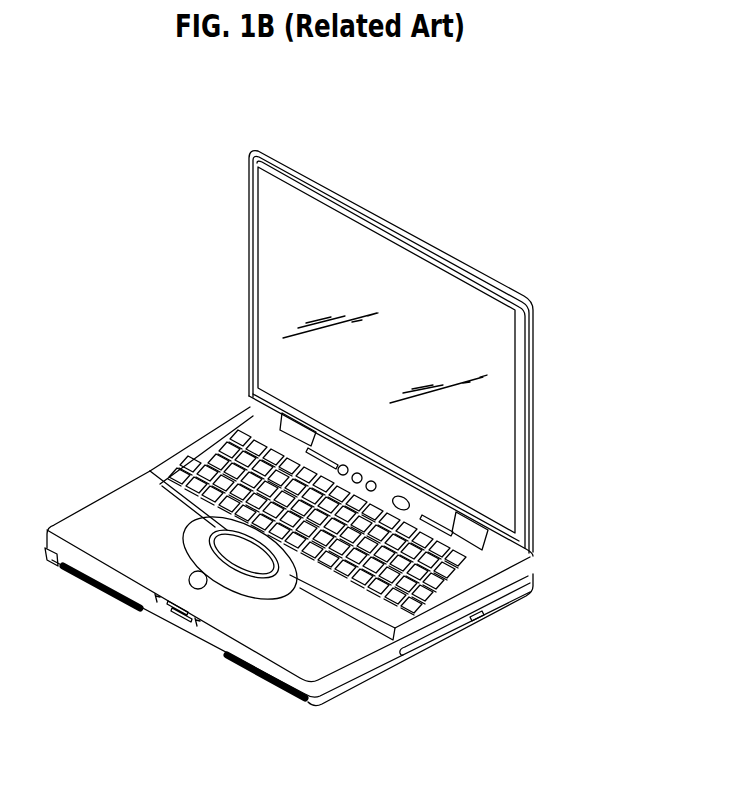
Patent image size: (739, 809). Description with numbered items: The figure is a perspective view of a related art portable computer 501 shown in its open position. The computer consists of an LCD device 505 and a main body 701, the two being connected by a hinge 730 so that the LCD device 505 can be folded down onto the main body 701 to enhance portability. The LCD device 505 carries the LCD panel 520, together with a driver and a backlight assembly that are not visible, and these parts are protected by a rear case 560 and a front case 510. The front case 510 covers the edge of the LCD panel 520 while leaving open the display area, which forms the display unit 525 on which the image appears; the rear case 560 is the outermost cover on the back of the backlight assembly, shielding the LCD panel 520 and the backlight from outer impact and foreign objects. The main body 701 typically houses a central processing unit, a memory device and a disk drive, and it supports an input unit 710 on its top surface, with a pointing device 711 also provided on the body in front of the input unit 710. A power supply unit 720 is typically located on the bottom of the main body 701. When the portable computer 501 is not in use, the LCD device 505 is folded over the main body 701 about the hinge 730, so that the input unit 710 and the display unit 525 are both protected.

The portable computer 501 is at (63, 104).
The LCD device 505 is at (407, 220).
The rear case 560 is at (484, 273).
The front case 510 is at (521, 403).
The LCD panel 520 is at (287, 255).
The display unit 525 is at (438, 313).
The main body 701 is at (363, 687).
The input unit 710 is at (485, 565).
The touch pad 711 is at (237, 553).
The power supply unit 720 is at (443, 637).
The hinge 730 is at (297, 430).